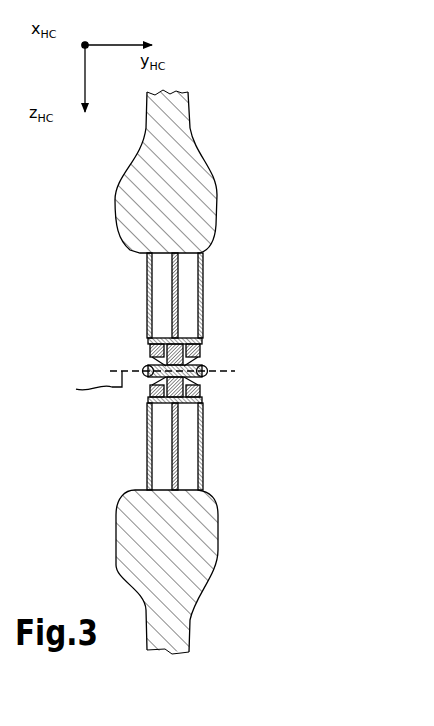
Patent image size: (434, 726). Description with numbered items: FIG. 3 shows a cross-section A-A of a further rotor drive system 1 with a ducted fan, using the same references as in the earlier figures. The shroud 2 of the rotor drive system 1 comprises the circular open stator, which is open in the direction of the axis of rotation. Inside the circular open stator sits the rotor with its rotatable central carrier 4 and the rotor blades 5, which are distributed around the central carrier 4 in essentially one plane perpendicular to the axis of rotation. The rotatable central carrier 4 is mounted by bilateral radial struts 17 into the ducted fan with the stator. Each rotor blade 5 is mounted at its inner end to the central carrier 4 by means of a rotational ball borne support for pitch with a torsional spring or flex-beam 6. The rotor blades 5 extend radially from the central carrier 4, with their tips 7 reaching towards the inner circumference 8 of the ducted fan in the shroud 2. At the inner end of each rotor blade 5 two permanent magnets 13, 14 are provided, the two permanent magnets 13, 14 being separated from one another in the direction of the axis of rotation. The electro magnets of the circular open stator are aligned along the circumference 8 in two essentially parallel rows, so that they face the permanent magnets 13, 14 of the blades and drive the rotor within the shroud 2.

The rotor drive system 1 is at (94, 162).
The shroud 2 is at (200, 195).
The central carrier 4 is at (205, 378).
The rotor blades 5 is at (175, 300).
The flex-beam 6 is at (164, 400).
The tips 7 is at (179, 260).
The inner circumference 8 is at (140, 252).
The permanent magnet 13 is at (148, 340).
The permanent magnet 14 is at (200, 342).
The radial struts 17 is at (147, 448).